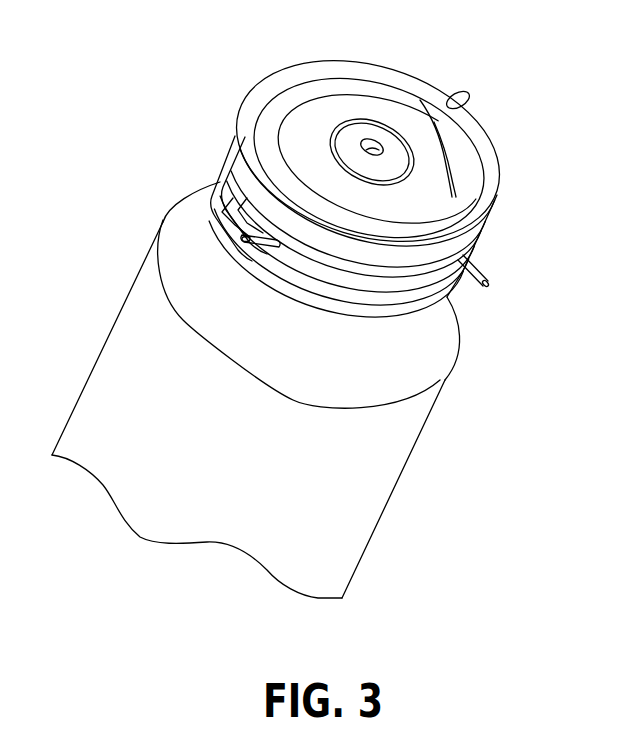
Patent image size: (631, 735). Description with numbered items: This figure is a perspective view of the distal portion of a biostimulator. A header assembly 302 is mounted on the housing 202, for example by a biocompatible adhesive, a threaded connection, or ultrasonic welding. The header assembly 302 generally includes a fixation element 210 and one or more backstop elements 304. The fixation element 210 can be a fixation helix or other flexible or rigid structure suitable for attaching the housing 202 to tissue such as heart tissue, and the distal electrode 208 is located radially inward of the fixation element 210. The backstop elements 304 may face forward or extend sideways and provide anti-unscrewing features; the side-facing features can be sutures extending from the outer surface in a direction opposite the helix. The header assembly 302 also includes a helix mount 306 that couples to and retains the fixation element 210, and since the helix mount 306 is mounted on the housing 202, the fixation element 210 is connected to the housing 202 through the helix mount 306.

The housing 202 is at (332, 510).
The header assembly 302 is at (247, 32).
The fixation element 210 is at (490, 143).
The helix mount 306 is at (432, 193).
The distal electrode 208 is at (358, 130).
The backstop element 304 is at (258, 242).